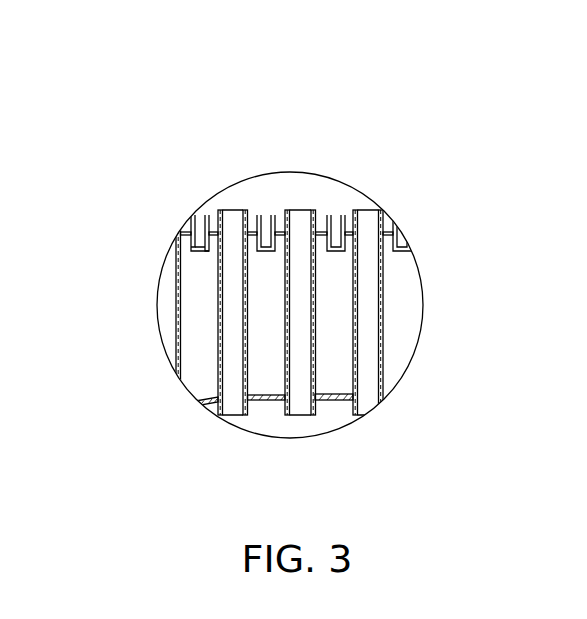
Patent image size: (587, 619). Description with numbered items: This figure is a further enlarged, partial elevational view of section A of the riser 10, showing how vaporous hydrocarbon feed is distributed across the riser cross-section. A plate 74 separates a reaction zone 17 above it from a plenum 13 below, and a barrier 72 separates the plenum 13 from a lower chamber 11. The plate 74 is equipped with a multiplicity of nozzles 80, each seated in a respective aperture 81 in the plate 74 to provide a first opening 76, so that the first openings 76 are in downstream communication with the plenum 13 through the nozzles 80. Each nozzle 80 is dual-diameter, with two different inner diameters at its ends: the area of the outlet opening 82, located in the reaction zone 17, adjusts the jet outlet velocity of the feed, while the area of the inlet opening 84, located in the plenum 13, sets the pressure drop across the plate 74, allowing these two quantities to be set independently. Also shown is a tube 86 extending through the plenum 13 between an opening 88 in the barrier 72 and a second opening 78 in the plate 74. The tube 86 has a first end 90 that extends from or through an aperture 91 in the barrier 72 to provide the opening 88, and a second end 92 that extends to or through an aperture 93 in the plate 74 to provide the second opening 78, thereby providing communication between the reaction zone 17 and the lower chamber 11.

The riser 10 is at (414, 149).
The lower chamber 11 is at (303, 422).
The plenum 13 is at (337, 357).
The reaction zone 17 is at (276, 197).
The barrier 72 is at (268, 400).
The plate 74 is at (177, 249).
The first opening 76 is at (203, 228).
The second opening 78 is at (308, 232).
The nozzle 80 is at (193, 220).
The aperture 81 is at (176, 233).
The outlet opening 82 is at (207, 215).
The inlet opening 84 is at (200, 252).
The tube 86 is at (232, 348).
The opening 88 is at (219, 398).
The first end 90 is at (217, 407).
The aperture 91 is at (218, 411).
The second end 92 is at (233, 214).
The aperture 93 is at (287, 208).
The section A is at (318, 78).